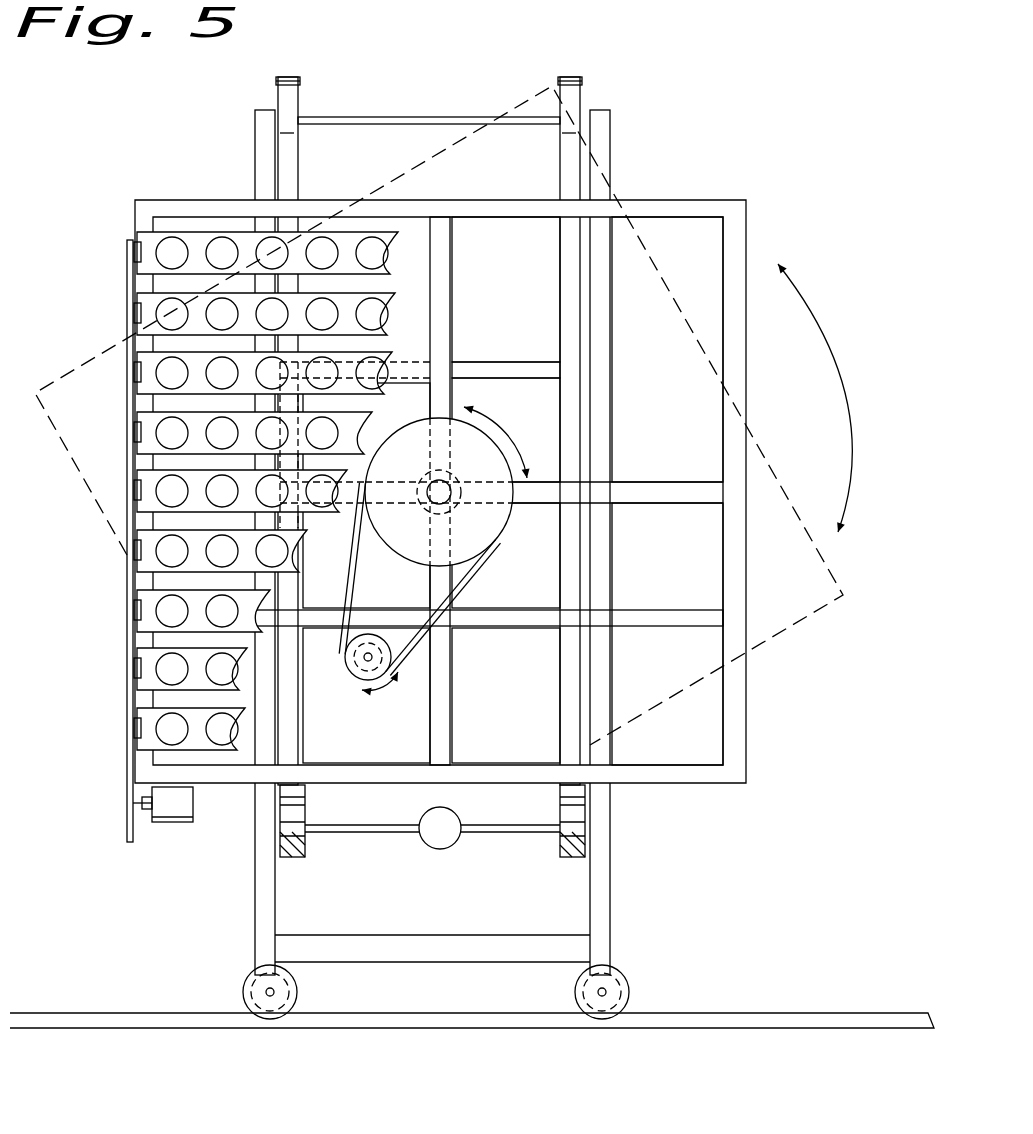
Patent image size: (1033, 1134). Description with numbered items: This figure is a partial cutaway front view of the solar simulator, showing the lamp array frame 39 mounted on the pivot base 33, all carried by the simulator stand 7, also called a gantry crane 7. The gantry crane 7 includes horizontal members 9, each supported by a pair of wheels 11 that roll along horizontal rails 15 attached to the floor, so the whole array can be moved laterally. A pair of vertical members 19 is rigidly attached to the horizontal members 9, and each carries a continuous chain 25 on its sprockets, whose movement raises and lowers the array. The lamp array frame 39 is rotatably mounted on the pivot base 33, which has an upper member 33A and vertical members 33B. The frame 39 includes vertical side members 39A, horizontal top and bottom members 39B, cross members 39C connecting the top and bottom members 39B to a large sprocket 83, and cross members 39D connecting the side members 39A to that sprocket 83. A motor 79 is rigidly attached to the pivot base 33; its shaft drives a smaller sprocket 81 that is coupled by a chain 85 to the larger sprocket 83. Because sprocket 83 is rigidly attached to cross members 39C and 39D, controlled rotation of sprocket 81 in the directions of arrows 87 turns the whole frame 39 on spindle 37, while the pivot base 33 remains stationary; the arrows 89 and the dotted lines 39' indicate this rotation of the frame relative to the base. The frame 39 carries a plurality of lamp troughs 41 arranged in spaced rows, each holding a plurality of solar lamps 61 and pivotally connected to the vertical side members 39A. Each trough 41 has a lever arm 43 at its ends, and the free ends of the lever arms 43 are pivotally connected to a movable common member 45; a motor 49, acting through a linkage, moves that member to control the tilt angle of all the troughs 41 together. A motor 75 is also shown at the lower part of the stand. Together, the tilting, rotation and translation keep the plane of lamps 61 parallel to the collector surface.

The simulator stand 7 is at (472, 552).
The horizontal member 9 is at (420, 942).
The wheel 11 is at (247, 980).
The horizontal rail 15 is at (697, 1012).
The vertical member 19 is at (267, 907).
The continuous chain 25 is at (303, 798).
The pivot base 33 is at (438, 491).
The upper member of pivot base 33A is at (467, 372).
The vertical member of pivot base 33B is at (290, 605).
The spindle 37 is at (435, 490).
The lamp array frame 39 is at (448, 491).
The dotted lines showing rotated lamp array frame 39' is at (439, 415).
The vertical side member 39A is at (147, 224).
The top and bottom member 39B is at (497, 210).
The cross member 39C is at (448, 315).
The cross member 39D is at (650, 493).
The lamp trough 41 is at (230, 456).
The lever arm 43 is at (133, 253).
The movable common member 45 is at (128, 677).
The motor 49 is at (170, 823).
The solar lamp 61 is at (218, 240).
The drive motor 75 is at (440, 850).
The motor 79 is at (360, 672).
The sprocket 81 is at (350, 671).
The sprocket 83 is at (439, 492).
The chain 85 is at (362, 597).
The arrow 87 is at (505, 421).
The arrow 89 is at (817, 314).